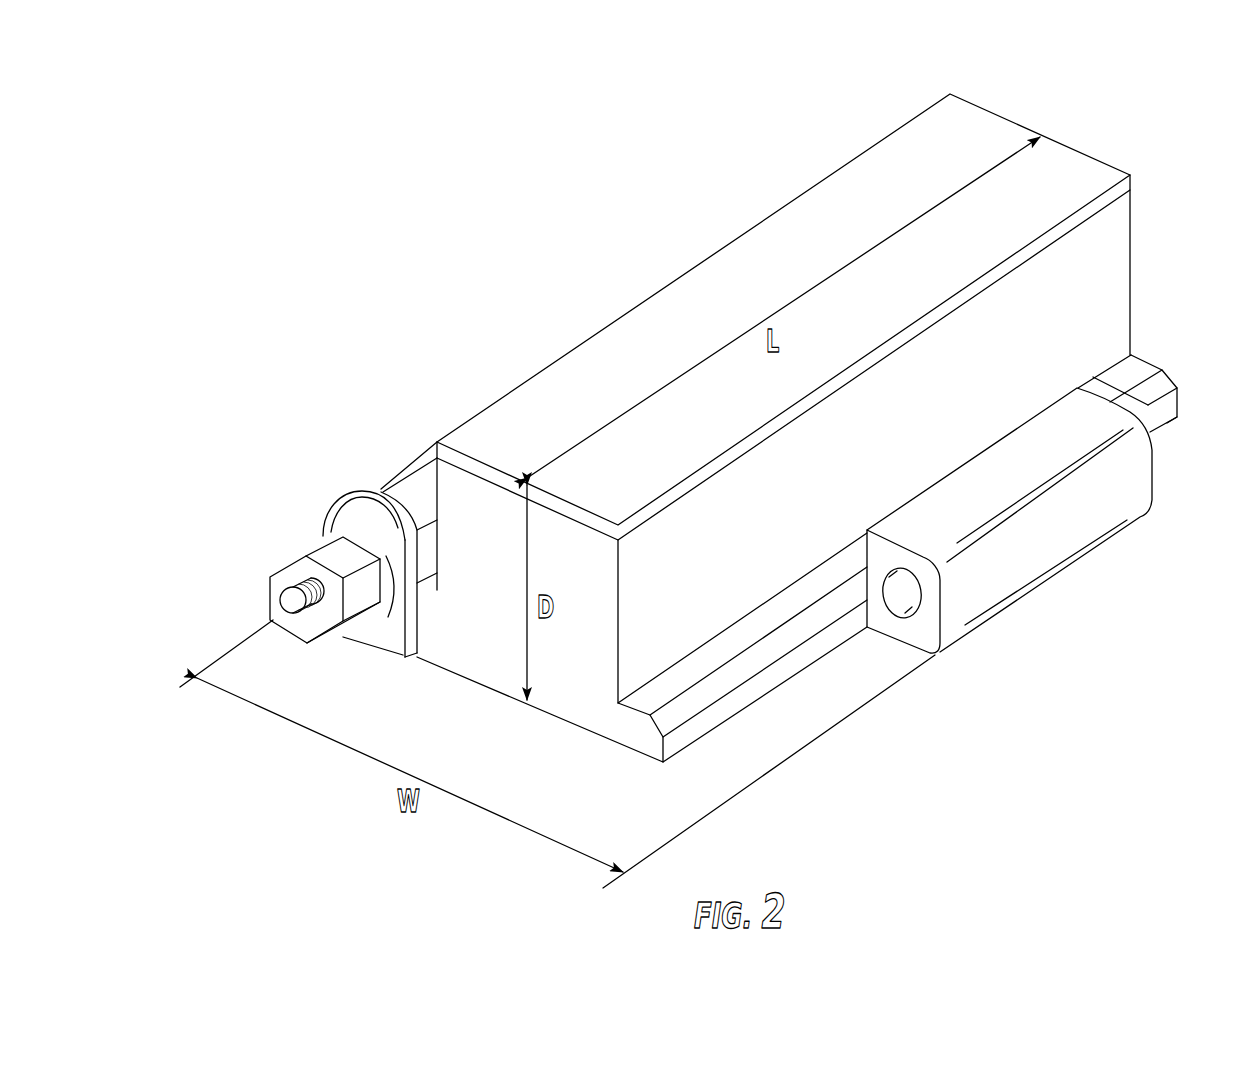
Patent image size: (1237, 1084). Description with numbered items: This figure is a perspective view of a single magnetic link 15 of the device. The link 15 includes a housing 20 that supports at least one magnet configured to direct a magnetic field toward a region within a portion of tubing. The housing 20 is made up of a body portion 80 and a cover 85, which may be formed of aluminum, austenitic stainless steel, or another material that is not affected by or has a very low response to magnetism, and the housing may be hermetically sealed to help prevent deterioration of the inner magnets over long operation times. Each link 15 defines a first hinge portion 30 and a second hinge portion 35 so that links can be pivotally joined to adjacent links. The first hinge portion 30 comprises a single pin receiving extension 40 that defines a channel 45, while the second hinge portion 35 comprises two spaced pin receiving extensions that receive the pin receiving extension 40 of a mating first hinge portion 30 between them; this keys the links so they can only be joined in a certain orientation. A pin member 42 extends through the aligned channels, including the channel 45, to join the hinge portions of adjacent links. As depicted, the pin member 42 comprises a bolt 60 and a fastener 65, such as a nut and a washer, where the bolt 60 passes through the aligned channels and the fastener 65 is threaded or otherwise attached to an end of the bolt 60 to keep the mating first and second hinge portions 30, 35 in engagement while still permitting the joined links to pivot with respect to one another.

The link 15 is at (450, 300).
The housing 20 is at (1090, 281).
The cover 85 is at (792, 263).
The second hinge portion 35 is at (405, 468).
The pin member 42 is at (285, 523).
The fastener 65 is at (280, 572).
The bolt 60 is at (293, 605).
The first hinge portion 30 is at (1055, 523).
The pin receiving extension 40 is at (993, 620).
The channel 45 is at (893, 613).
The body portion 80 is at (1062, 327).